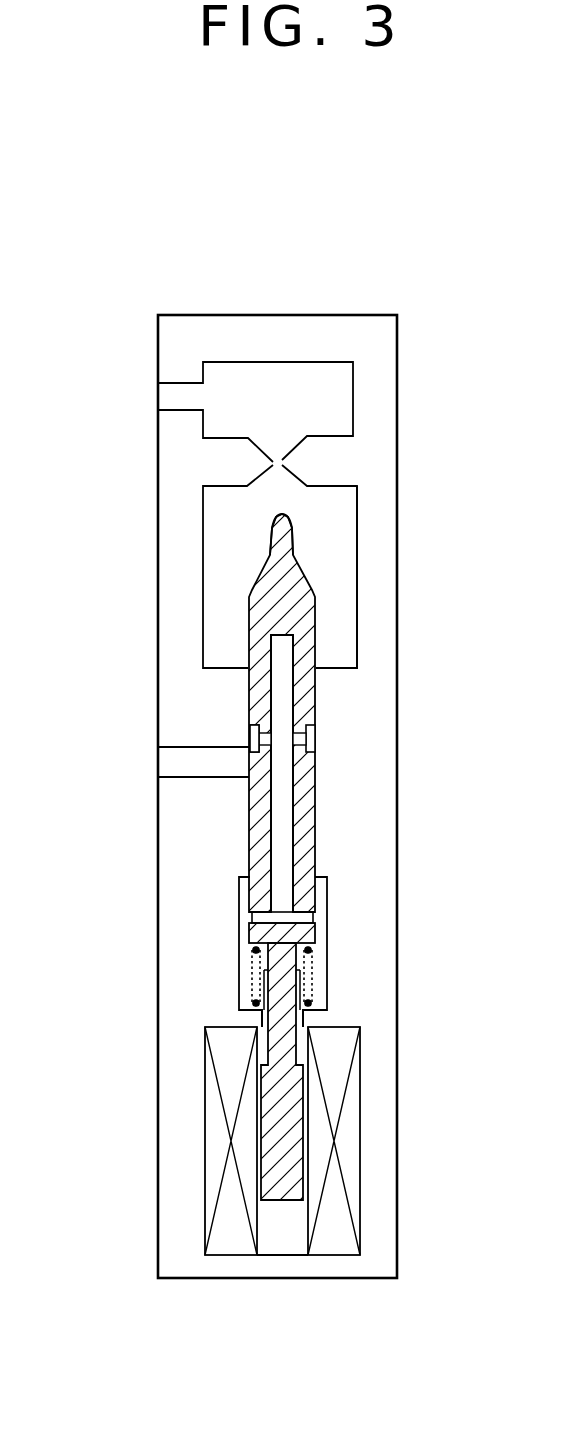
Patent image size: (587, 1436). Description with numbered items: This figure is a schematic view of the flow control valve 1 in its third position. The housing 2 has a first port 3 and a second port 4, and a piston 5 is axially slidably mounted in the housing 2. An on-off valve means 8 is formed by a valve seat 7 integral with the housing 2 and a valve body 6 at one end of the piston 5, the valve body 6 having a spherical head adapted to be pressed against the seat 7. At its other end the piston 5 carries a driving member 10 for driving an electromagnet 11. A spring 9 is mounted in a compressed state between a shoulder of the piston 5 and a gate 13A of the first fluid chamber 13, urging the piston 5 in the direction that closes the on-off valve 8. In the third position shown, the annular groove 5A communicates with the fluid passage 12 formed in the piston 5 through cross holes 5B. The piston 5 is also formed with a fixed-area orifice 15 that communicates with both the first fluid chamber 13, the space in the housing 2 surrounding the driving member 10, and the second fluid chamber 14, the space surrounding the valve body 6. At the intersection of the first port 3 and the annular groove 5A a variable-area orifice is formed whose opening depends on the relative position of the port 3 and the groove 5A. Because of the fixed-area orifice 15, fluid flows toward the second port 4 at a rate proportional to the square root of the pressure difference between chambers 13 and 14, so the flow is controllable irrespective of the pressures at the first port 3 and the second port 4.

The flow control valve 1 is at (353, 312).
The housing 2 is at (372, 355).
The first port 3 is at (188, 757).
The second port 4 is at (180, 398).
The piston 5 is at (303, 795).
The annular groove 5A is at (252, 737).
The cross holes 5B is at (260, 725).
The valve body 6 is at (291, 532).
The valve seat 7 is at (256, 490).
The on-off valve means 8 is at (277, 440).
The spring 9 is at (308, 970).
The driving member 10 is at (283, 1128).
The electromagnet 11 is at (229, 1135).
The fluid passage 12 is at (278, 871).
The first fluid chamber 13 is at (243, 968).
The gate 13A is at (262, 1020).
The second fluid chamber 14 is at (322, 578).
The fixed-area orifice 15 is at (298, 648).